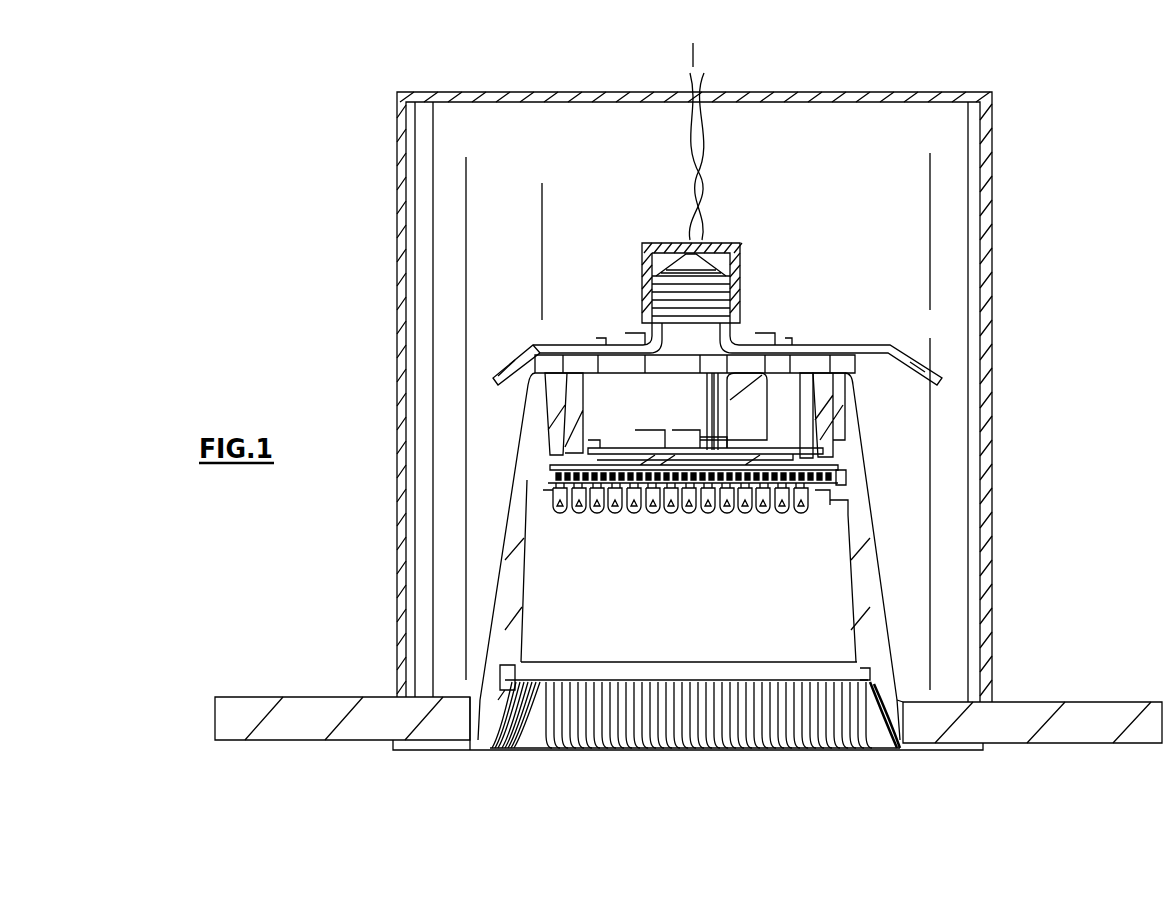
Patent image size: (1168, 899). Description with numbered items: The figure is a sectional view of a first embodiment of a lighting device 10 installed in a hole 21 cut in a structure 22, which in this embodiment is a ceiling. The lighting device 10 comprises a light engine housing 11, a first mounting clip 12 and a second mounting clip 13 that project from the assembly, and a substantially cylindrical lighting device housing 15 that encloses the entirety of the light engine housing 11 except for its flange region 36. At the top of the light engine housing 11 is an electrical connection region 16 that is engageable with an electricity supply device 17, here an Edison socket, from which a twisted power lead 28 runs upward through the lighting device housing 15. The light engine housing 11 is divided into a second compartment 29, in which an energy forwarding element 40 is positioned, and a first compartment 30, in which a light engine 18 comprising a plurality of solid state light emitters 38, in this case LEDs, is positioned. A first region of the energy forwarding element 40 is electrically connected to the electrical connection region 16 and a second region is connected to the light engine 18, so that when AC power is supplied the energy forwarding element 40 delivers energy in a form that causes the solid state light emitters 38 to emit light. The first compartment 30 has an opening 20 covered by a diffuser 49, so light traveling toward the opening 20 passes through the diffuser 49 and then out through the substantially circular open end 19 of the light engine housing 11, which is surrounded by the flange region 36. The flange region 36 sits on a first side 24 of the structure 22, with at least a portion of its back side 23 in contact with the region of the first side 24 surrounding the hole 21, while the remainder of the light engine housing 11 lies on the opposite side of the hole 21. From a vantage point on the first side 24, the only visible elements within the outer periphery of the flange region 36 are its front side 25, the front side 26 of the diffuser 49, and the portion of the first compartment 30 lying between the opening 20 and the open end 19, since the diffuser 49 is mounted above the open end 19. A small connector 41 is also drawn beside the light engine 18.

The lighting device 10 is at (1076, 138).
The light engine housing 11 is at (862, 508).
The first mounting clip 12 is at (525, 340).
The second mounting clip 13 is at (898, 352).
The lighting device housing 15 is at (990, 214).
The electrical connection region 16 is at (728, 284).
The electricity supply device 17 is at (741, 268).
The light engine 18 is at (835, 535).
The open end 19 is at (897, 778).
The opening 20 is at (862, 652).
The hole 21 is at (470, 752).
The structure 22 is at (292, 722).
The back side of flange region 23 is at (926, 740).
The first side of structure 24 is at (976, 748).
The front side of flange region 25 is at (428, 752).
The front side of diffuser 26 is at (770, 686).
The power cable 28 is at (696, 52).
The second compartment 29 is at (825, 440).
The first compartment 30 is at (830, 630).
The flange region 36 is at (962, 756).
The solid state light emitters 38 is at (560, 515).
The energy forwarding element 40 is at (616, 448).
The connector 41 is at (832, 478).
The diffuser 49 is at (522, 690).